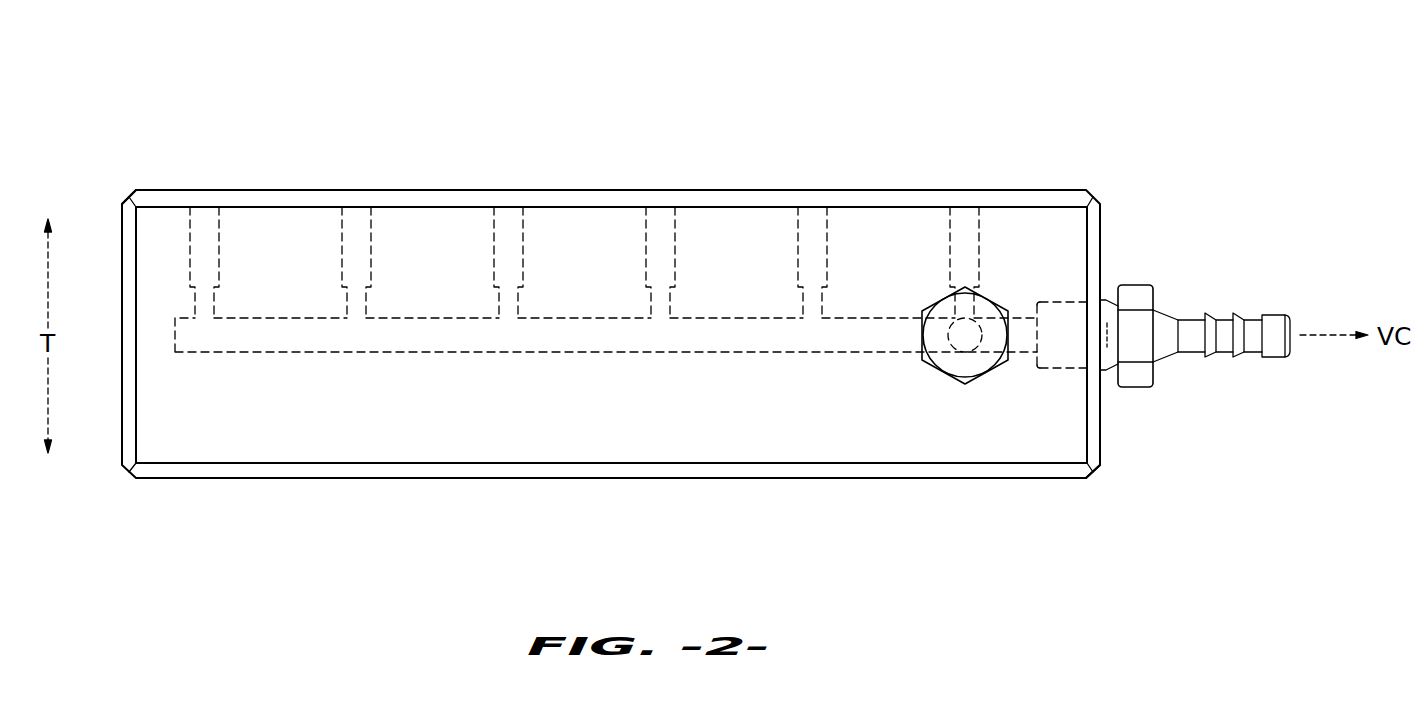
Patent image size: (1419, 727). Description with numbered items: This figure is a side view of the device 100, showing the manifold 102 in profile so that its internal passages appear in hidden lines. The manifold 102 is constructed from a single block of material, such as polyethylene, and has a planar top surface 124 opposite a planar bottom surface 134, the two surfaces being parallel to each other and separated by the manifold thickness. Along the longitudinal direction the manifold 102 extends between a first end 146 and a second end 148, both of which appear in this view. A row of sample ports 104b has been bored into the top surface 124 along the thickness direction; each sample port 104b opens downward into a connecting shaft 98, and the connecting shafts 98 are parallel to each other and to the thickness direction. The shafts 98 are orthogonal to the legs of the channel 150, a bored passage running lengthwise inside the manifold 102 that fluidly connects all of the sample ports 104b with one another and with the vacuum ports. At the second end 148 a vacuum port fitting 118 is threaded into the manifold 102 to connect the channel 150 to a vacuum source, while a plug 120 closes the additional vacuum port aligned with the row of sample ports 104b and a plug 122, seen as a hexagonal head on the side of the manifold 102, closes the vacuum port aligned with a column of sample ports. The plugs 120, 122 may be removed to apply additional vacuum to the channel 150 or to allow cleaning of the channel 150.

The device 100 is at (1137, 127).
The manifold 102 is at (170, 440).
The sample ports 104b is at (200, 188).
The connecting shafts 98 is at (208, 237).
The vacuum port fitting 118 is at (1163, 322).
The plug 120 is at (1135, 297).
The plug 122 is at (960, 355).
The top surface 124 is at (158, 188).
The bottom surface 134 is at (397, 482).
The first end 146 is at (120, 482).
The second end 148 is at (1094, 485).
The channel 150 is at (583, 340).